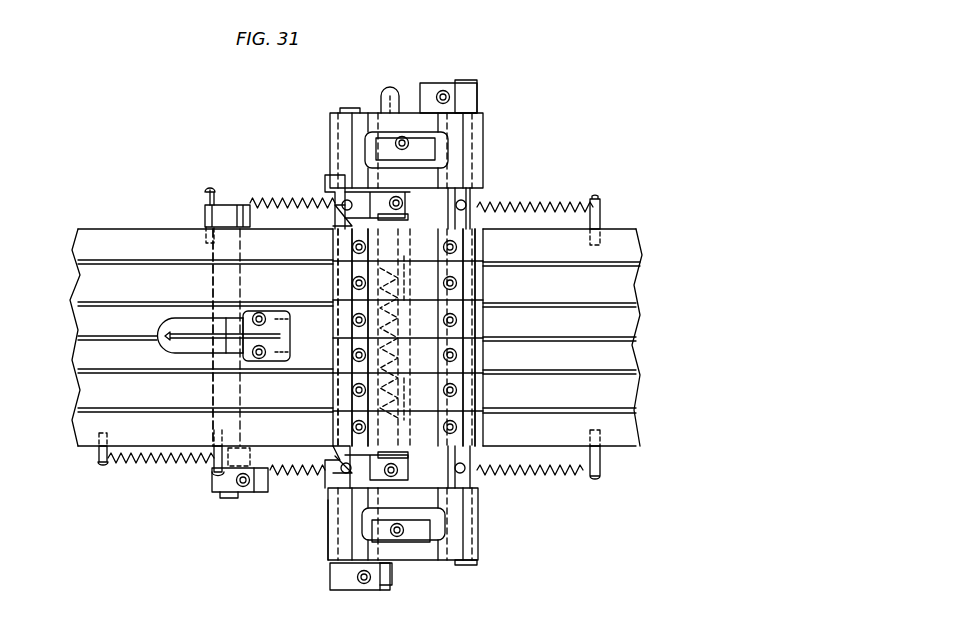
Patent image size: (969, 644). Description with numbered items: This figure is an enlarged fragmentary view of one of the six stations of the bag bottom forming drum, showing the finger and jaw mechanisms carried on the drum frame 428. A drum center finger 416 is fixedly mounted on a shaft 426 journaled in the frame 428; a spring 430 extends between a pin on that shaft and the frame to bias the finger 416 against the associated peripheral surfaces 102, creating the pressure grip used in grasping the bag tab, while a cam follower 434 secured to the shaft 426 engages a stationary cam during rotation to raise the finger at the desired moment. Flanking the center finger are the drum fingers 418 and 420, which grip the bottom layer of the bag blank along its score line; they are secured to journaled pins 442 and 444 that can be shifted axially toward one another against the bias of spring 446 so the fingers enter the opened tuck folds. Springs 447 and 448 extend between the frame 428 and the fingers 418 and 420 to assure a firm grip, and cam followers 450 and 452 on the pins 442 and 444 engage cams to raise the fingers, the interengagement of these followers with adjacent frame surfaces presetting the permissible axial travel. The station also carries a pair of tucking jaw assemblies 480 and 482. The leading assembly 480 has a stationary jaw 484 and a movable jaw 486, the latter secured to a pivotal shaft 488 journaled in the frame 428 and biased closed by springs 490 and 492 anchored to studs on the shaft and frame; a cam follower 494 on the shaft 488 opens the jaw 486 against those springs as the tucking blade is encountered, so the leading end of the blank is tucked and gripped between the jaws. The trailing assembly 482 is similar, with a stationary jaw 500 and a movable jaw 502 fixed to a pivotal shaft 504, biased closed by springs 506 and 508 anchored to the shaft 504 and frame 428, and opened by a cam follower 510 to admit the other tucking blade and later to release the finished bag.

The peripheral surfaces 102 is at (92, 216).
The drum center finger 416 is at (251, 321).
The drum finger 418 is at (330, 190).
The drum finger 420 is at (330, 500).
The shaft 426 is at (218, 397).
The frame 428 is at (100, 351).
The spring 430 is at (145, 466).
The cam follower 434 is at (240, 496).
The pin 442 is at (388, 92).
The pin 444 is at (396, 566).
The spring 446 is at (409, 337).
The spring 447 is at (405, 212).
The spring 448 is at (407, 467).
The cam follower 450 is at (430, 143).
The cam follower 452 is at (428, 534).
The leading tucking jaw assembly 480 is at (330, 386).
The tucking jaw assembly 482 is at (468, 323).
The stationary jaw 484 is at (338, 424).
The movable jaw 486 is at (336, 404).
The pivotal shaft 488 is at (330, 562).
The spring 490 is at (268, 198).
The spring 492 is at (290, 478).
The cam follower 494 is at (366, 592).
The stationary jaw 500 is at (458, 356).
The movable jaw 502 is at (468, 394).
The pivotal shaft 504 is at (485, 500).
The spring 506 is at (564, 198).
The spring 508 is at (570, 472).
The cam follower 510 is at (429, 83).